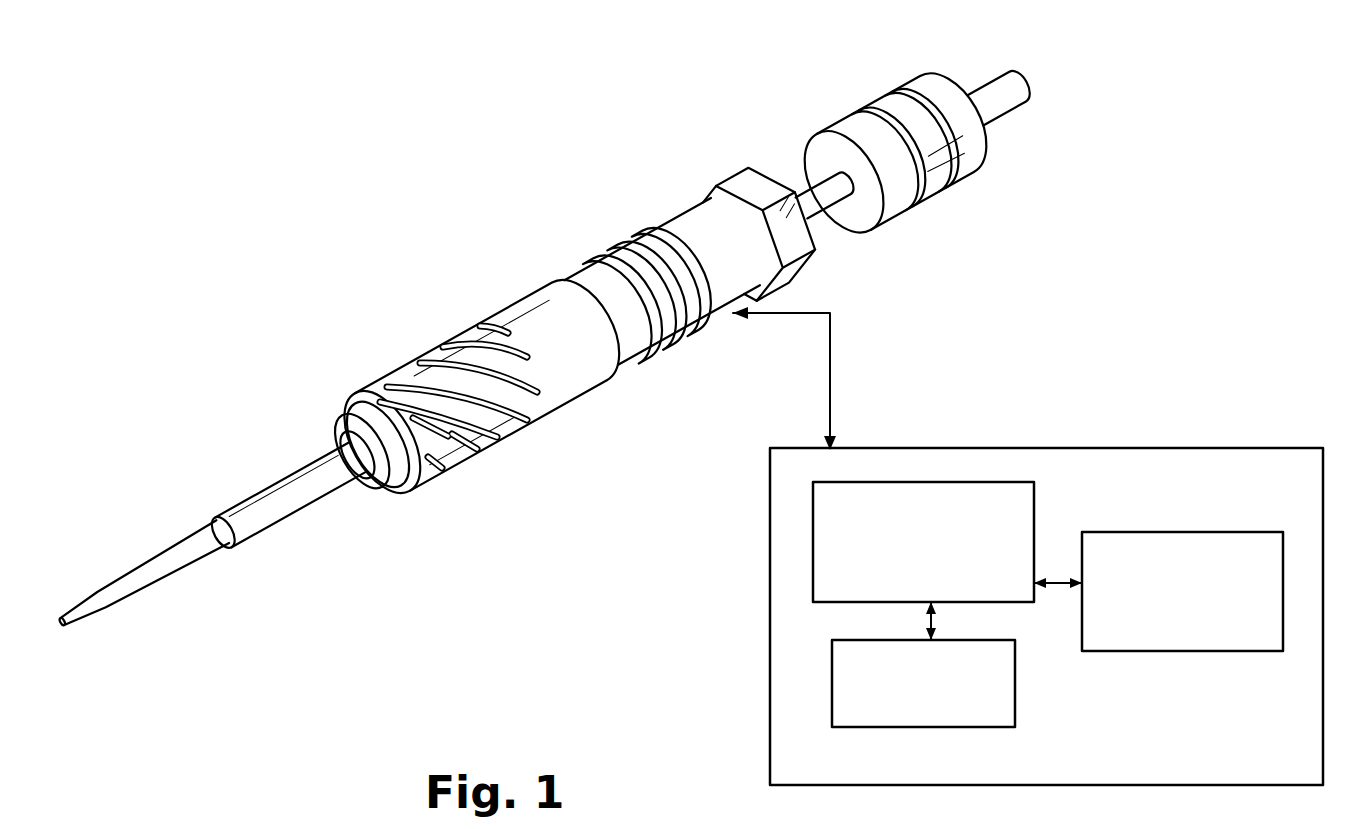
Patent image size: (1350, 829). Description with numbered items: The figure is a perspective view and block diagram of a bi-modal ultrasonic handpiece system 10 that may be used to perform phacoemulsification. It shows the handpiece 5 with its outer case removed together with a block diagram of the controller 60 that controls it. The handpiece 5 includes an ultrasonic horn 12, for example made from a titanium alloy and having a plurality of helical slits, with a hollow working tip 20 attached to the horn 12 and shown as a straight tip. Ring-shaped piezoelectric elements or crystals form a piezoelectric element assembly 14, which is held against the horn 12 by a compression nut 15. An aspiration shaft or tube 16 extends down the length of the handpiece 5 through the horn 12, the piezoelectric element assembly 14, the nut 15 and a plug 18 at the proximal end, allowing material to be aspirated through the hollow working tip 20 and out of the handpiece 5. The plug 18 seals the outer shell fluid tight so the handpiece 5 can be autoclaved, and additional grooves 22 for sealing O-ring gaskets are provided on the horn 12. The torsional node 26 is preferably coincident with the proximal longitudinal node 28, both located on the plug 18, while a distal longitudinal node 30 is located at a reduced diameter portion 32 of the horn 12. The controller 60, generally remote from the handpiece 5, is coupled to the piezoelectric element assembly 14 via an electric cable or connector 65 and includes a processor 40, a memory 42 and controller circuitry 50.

The handpiece 5 is at (527, 463).
The bi-modal ultrasonic handpiece system 10 is at (208, 205).
The ultrasonic horn 12 is at (495, 378).
The piezoelectric element assembly 14 is at (661, 282).
The compression nut 15 is at (761, 229).
The aspiration shaft or tube 16 is at (1001, 96).
The plug 18 is at (888, 157).
The hollow working tip 20 is at (209, 541).
The grooves 22 is at (655, 288).
The torsional node 26 is at (897, 152).
The proximal longitudinal node 28 is at (930, 134).
The distal longitudinal node 30 is at (382, 441).
The reduced diameter portion 32 is at (362, 451).
The processor 40 is at (906, 562).
The memory 42 is at (909, 707).
The controller circuitry 50 is at (1166, 631).
The controller 60 is at (1179, 744).
The electric cable or connector 65 is at (832, 343).